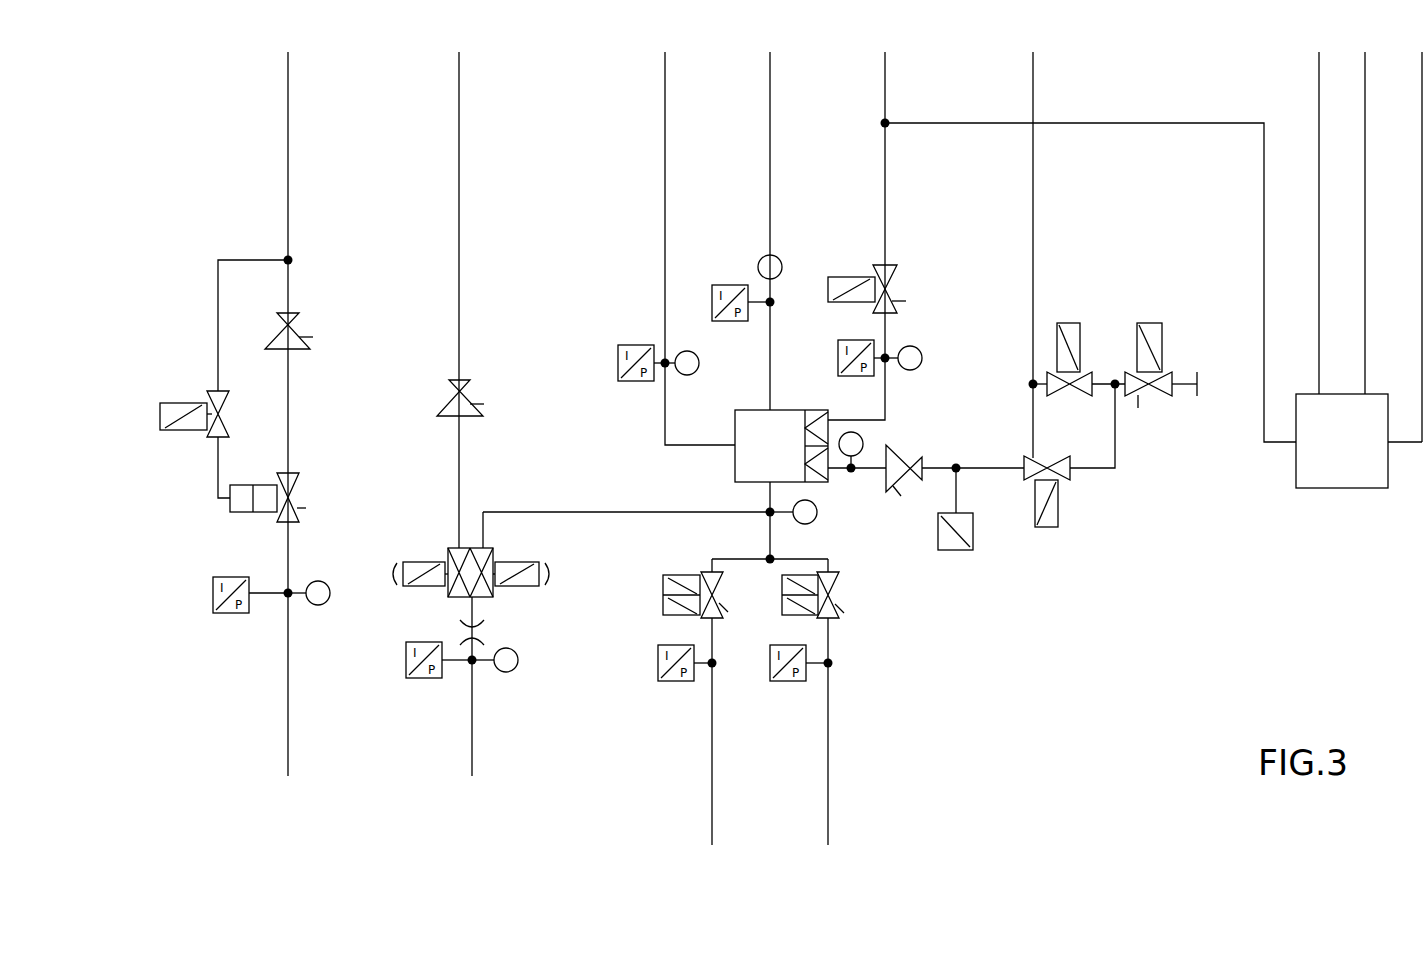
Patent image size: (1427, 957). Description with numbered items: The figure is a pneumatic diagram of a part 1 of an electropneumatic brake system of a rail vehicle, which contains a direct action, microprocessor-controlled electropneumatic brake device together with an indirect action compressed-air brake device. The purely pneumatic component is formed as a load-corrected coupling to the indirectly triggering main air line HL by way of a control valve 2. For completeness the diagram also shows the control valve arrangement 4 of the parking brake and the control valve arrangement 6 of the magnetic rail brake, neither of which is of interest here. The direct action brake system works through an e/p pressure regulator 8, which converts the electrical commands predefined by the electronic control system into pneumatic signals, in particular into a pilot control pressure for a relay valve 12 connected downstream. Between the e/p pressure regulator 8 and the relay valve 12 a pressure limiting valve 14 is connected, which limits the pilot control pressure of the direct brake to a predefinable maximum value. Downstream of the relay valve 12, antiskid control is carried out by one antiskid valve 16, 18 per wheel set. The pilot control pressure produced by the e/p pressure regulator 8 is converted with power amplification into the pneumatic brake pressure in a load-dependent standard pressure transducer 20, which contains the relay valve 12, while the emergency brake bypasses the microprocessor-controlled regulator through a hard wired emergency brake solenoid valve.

The part of an electropneumatic brake system 1 is at (236, 66).
The control valve 2 is at (1323, 480).
The control valve arrangement of the parking brake 4 is at (509, 372).
The control valve arrangement of the magnetic rail brake 6 is at (327, 253).
The e/p pressure regulator 8 is at (1104, 300).
The relay valve 12 is at (783, 420).
The pressure limiting valve 14 is at (894, 452).
The antiskid valve 16 is at (668, 580).
The antiskid valve 18 is at (838, 578).
The load-dependent standard pressure transducer 20 is at (1021, 586).
The main air line HL is at (1422, 200).